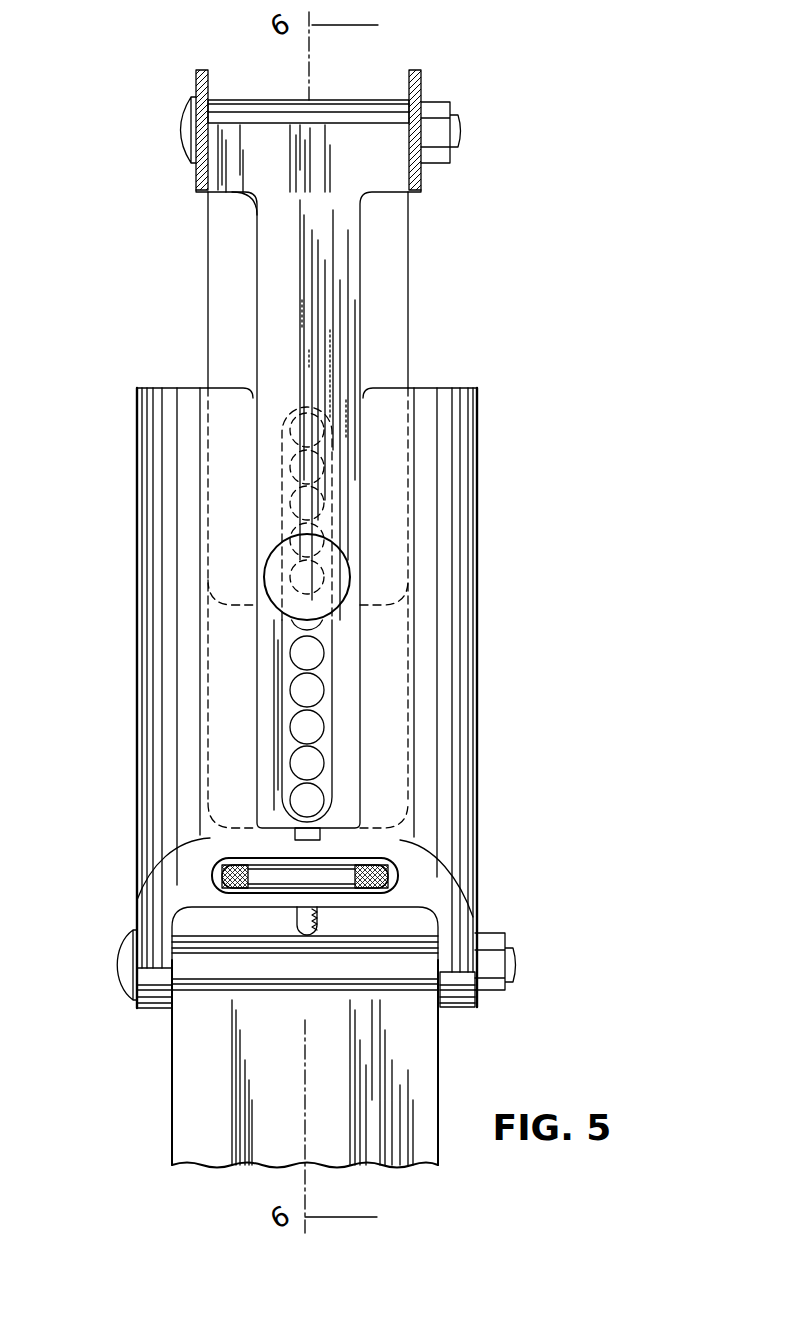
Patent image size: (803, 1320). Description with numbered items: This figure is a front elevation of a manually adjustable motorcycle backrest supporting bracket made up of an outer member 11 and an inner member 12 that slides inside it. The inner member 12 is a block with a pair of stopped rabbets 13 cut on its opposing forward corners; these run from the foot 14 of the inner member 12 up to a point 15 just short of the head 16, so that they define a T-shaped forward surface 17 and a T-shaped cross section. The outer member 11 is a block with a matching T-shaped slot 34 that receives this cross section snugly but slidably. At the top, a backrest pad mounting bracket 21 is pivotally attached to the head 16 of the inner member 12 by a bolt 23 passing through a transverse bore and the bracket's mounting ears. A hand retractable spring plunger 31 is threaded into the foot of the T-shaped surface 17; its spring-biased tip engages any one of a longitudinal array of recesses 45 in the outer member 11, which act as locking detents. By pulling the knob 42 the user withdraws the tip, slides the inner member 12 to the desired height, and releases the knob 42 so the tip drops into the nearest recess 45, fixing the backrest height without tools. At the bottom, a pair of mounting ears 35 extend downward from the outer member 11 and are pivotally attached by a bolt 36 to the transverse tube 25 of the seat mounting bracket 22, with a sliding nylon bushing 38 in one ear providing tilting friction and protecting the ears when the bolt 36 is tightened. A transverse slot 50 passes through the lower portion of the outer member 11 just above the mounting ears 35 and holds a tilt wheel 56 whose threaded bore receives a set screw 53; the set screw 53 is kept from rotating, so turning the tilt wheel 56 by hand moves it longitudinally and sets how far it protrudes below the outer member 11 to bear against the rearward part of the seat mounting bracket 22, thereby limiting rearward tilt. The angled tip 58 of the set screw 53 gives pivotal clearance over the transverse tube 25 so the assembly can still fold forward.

The outer member 11 is at (178, 388).
The inner member 12 is at (412, 234).
The stopped rabbets 13 is at (227, 268).
The foot 14 is at (247, 607).
The point short of the head 15 is at (237, 198).
The head 16 is at (367, 100).
The T-shaped forward surface 17 is at (303, 287).
The backrest pad mounting bracket 21 is at (197, 72).
The seat mounting bracket 22 is at (182, 1118).
The bolt 23 is at (187, 110).
The transverse tube 25 is at (200, 965).
The spring plunger 31 is at (348, 554).
The T-shaped slot 34 is at (357, 738).
The mounting ears 35 is at (158, 990).
The bolt 36 is at (130, 940).
The sliding nylon bushing 38 is at (475, 1000).
The knob 42 is at (343, 572).
The recesses 45 is at (312, 405).
The transverse slot 50 is at (257, 870).
The set screw 53 is at (297, 925).
The tilt wheel 56 is at (210, 838).
The angled tip 58 is at (322, 935).